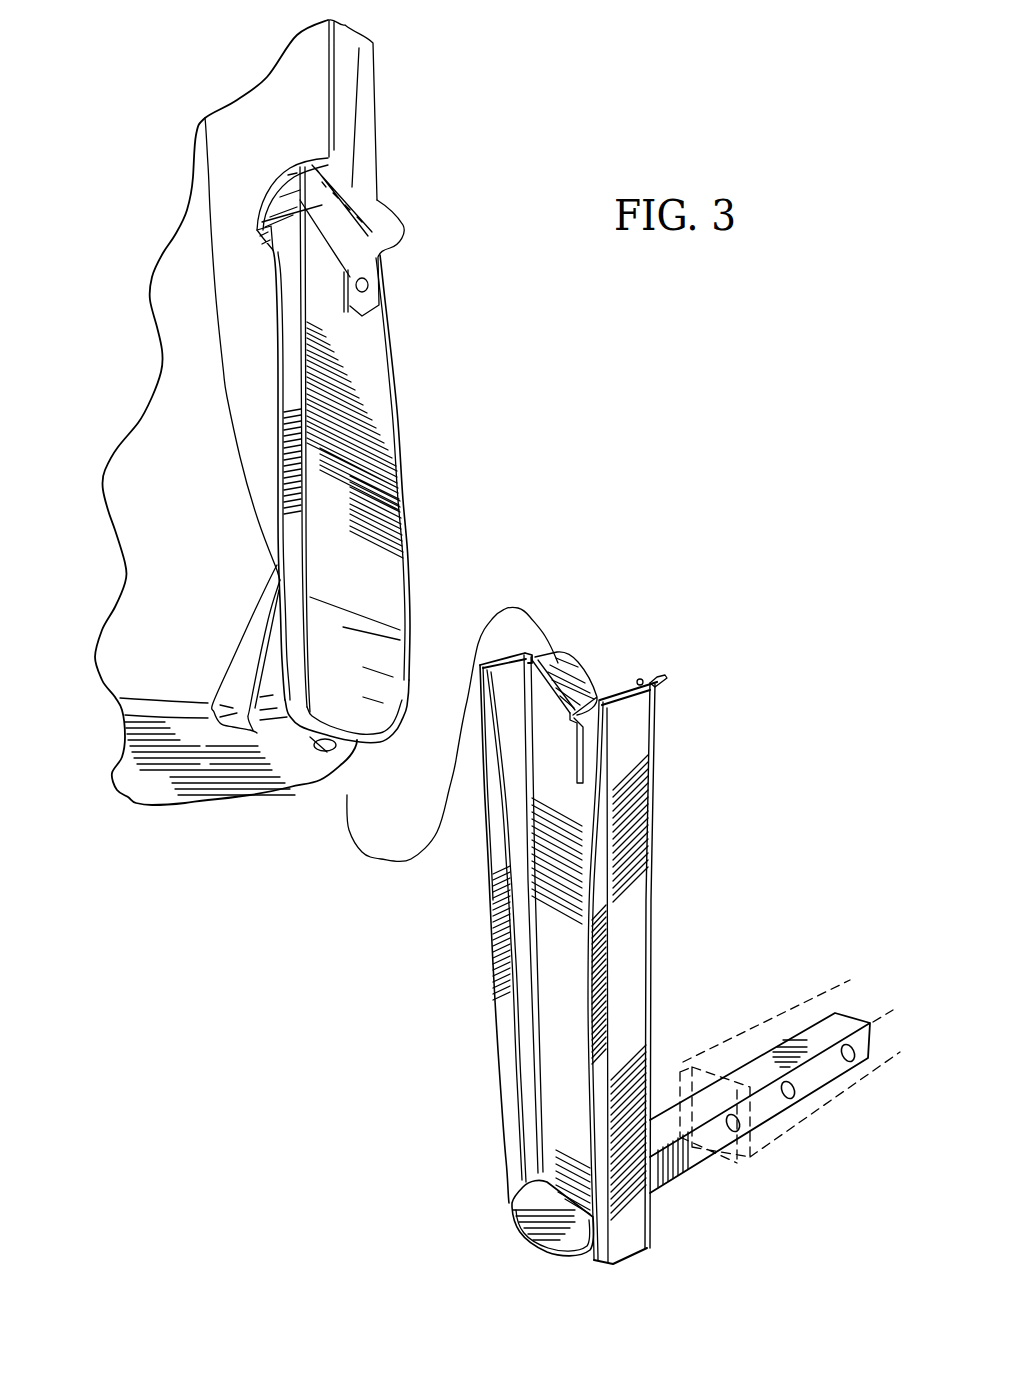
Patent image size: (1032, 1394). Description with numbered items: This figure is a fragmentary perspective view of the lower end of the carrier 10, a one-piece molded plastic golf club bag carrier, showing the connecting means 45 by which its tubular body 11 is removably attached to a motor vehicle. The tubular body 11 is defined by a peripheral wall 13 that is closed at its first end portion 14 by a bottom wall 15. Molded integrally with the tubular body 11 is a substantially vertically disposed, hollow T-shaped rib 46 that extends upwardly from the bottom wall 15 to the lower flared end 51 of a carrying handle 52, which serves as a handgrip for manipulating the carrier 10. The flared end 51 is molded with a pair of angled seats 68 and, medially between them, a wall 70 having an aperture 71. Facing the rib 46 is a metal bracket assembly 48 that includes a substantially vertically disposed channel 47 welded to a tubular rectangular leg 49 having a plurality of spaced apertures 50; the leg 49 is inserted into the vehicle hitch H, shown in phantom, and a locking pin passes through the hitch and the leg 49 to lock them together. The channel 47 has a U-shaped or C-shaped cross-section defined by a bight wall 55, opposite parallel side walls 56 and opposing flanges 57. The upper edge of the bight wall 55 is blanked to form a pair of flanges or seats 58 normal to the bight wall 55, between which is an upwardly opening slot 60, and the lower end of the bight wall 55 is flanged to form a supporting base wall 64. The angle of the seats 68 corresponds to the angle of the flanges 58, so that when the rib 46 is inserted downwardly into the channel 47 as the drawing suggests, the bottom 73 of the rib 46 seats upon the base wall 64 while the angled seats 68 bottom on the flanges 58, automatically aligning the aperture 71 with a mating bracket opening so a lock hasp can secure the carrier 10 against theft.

The carrier 10 is at (290, 1009).
The tubular body 11 is at (138, 330).
The peripheral wall 13 is at (195, 469).
The first end portion 14 is at (178, 664).
The bottom wall 15 is at (193, 780).
The connecting means 45 is at (620, 535).
The rib 46 is at (420, 492).
The channel 47 is at (663, 831).
The bracket assembly 48 is at (755, 916).
The leg 49 is at (670, 1167).
The apertures 50 is at (848, 1063).
The lower flared end 51 is at (288, 183).
The carrying handle 52 is at (370, 89).
The bight wall 55 is at (573, 1011).
The side walls 56 is at (507, 670).
The flanges 57 is at (493, 867).
The flanges or seats 58 is at (590, 673).
The slot 60 is at (583, 740).
The base wall 64 is at (557, 1227).
The angled seats 68 is at (333, 240).
The wall 70 is at (360, 310).
The aperture 71 is at (368, 285).
The bottom 73 is at (321, 752).
The vehicle hitch H is at (790, 1002).